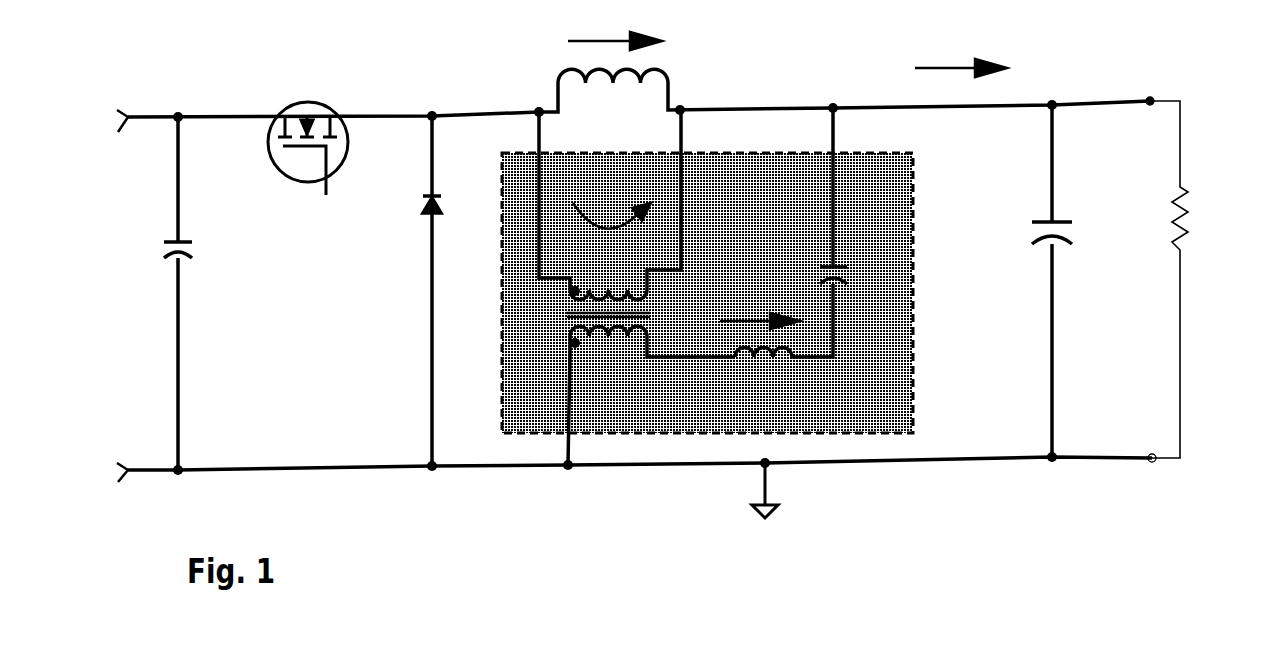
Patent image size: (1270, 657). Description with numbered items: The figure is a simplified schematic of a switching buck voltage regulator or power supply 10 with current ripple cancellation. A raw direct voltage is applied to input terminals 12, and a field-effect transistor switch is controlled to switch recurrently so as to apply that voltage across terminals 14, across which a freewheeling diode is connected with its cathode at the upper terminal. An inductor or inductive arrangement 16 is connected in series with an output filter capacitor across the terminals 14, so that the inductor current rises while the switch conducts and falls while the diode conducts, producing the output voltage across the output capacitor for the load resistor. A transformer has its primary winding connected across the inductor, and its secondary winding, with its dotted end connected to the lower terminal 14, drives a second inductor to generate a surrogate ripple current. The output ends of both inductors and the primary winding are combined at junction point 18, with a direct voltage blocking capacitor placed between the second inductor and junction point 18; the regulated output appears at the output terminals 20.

The regulator or power supply 10 is at (465, 580).
The input terminals 12 is at (117, 463).
The terminals 14 is at (432, 466).
The inductor or inductive arrangement 16 is at (670, 82).
The junction point 18 is at (834, 104).
The output terminals 20 is at (1158, 100).